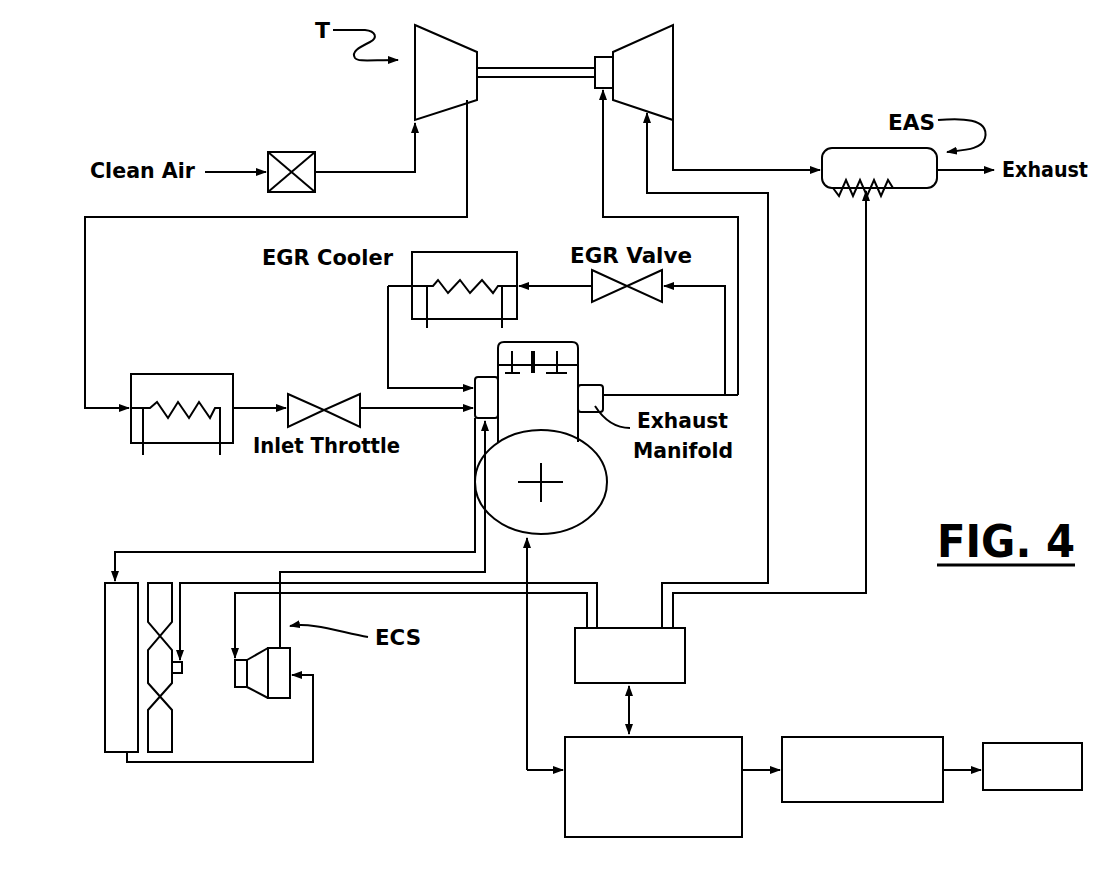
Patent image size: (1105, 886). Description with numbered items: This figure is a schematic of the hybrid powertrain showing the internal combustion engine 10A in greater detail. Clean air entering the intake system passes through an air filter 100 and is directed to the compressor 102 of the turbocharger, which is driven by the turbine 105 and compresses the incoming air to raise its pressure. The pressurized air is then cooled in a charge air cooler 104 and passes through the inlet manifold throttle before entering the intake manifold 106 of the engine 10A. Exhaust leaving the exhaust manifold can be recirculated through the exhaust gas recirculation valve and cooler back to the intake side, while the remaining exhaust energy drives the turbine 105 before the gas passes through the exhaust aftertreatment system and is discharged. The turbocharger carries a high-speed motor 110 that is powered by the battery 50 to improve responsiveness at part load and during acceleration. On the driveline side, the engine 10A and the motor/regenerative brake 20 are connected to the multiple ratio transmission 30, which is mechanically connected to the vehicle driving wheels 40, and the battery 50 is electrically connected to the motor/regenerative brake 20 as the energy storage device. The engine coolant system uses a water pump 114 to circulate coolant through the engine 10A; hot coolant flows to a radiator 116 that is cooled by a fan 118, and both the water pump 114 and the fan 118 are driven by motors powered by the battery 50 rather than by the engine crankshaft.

The compressor 102 is at (441, 53).
The high-speed motor 110 is at (601, 59).
The turbine 105 is at (660, 41).
The air filter 100 is at (298, 190).
The charge air cooler 104 is at (180, 382).
The intake manifold 106 is at (483, 381).
The engine 10A is at (592, 537).
The battery 50 is at (676, 649).
The motor/regenerative brake 20 is at (717, 745).
The transmission 30 is at (873, 745).
The vehicle driving wheels 40 is at (1017, 752).
The radiator 116 is at (116, 667).
The fan 118 is at (160, 580).
The water pump 114 is at (283, 692).